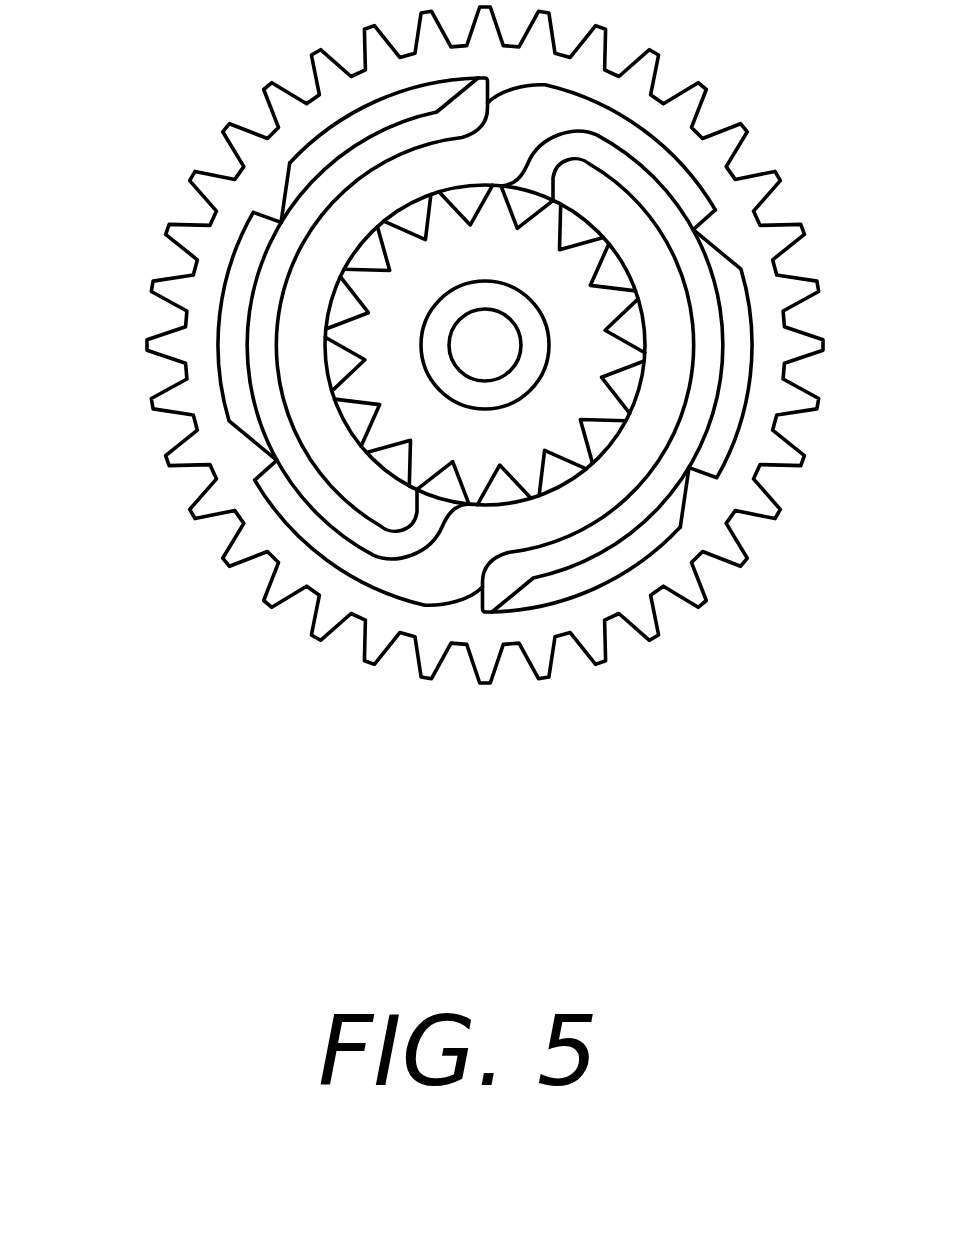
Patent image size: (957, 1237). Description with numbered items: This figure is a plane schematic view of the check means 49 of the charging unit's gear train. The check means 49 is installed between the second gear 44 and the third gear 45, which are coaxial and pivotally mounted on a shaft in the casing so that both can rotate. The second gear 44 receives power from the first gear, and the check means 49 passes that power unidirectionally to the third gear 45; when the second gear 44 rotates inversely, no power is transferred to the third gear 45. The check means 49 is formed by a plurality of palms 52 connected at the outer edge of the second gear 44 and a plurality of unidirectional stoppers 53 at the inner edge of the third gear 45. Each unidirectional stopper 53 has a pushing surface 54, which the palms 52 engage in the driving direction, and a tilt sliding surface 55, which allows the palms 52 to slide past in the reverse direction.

The second gear 44 is at (405, 400).
The third gear 45 is at (283, 568).
The check means 49 is at (398, 574).
The palms 52 is at (510, 575).
The unidirectional stoppers 53 is at (466, 600).
The pushing surface 54 is at (503, 610).
The tilt sliding surface 55 is at (450, 600).